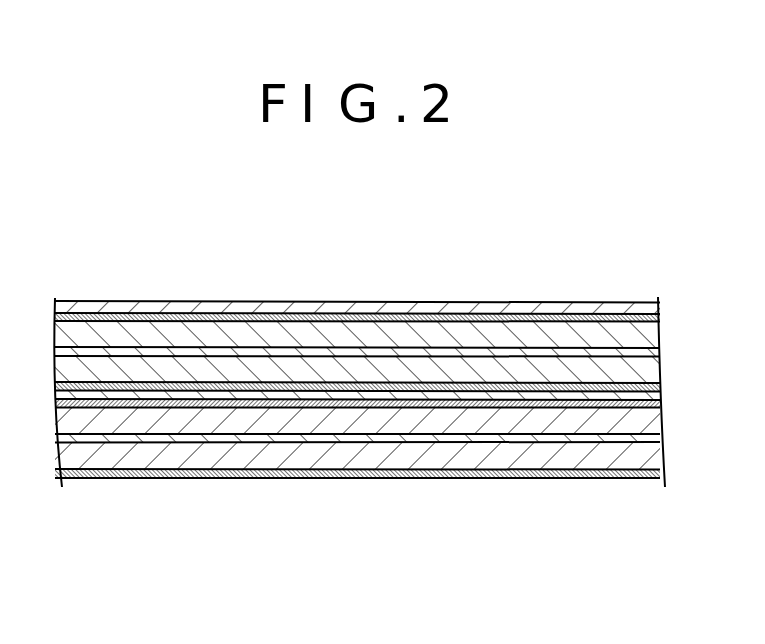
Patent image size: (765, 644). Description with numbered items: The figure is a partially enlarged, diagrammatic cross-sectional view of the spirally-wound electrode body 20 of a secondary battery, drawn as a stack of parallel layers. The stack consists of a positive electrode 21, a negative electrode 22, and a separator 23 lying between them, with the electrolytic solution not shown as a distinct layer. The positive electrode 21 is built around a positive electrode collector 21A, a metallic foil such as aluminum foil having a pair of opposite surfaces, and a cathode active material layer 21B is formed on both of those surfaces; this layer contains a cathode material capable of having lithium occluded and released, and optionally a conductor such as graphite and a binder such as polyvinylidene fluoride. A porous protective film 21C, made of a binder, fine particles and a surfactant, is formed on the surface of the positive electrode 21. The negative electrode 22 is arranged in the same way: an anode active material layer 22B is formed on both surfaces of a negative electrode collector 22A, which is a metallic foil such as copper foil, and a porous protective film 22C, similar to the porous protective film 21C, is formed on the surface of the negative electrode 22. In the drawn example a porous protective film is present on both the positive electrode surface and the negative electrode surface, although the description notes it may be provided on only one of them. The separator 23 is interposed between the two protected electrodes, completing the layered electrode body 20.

The spirally-wound electrode body 20 is at (440, 513).
The positive electrode 21 is at (310, 240).
The positive electrode collector 21A is at (102, 352).
The cathode active material layer 21B is at (172, 367).
The porous protective film 21C is at (270, 387).
The negative electrode 22 is at (573, 240).
The negative electrode collector 22A is at (368, 438).
The anode active material layer 22B is at (447, 453).
The porous protective film 22C is at (538, 472).
The separator 23 is at (605, 395).